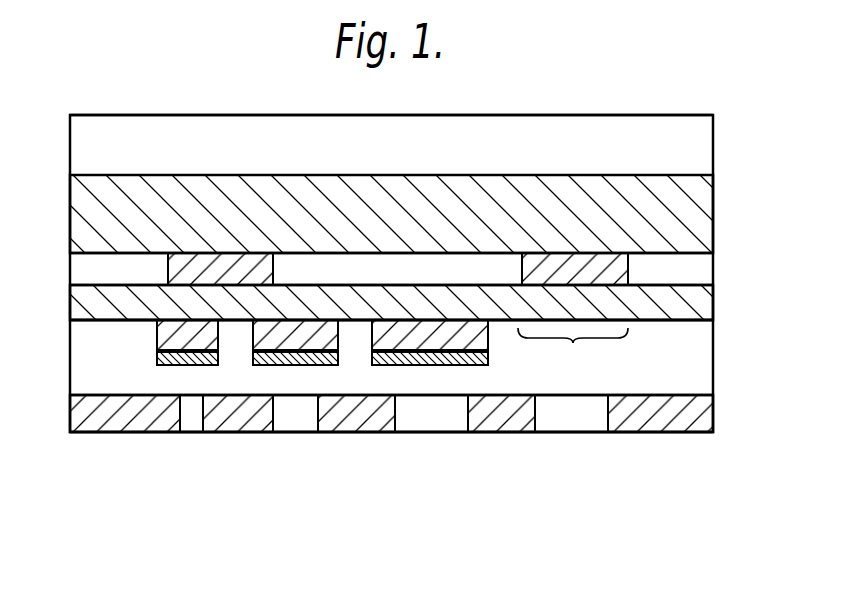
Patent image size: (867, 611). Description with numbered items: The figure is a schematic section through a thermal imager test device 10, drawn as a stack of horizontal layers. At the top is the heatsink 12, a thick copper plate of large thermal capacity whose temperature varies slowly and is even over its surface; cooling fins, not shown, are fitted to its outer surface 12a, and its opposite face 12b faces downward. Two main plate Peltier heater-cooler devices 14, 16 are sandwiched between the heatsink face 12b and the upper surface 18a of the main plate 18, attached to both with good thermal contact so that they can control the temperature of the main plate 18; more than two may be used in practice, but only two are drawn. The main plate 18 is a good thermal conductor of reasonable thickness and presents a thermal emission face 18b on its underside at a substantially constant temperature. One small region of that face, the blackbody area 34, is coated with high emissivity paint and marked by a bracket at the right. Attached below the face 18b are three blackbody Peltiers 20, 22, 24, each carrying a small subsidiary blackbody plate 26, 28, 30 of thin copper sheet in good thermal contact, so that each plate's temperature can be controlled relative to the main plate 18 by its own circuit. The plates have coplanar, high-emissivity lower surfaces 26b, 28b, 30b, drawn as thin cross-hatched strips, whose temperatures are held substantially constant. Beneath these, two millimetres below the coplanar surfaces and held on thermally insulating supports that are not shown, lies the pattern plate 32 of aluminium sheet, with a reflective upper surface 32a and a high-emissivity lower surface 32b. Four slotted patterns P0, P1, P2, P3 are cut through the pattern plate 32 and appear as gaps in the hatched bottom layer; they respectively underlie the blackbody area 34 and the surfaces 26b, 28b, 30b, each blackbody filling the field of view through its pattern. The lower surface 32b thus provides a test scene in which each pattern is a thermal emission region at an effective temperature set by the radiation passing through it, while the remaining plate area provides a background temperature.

The thermal imager test device 10 is at (80, 102).
The heatsink 12 is at (685, 223).
The heatsink surface 12a is at (685, 175).
The heatsink face 12b is at (688, 257).
The main plate Peltier heater-cooler device 14 is at (170, 263).
The main plate Peltier heater-cooler device 16 is at (522, 268).
The main plate 18 is at (695, 305).
The main plate surface 18a is at (688, 282).
The thermal emission face 18b is at (693, 323).
The blackbody Peltier 20 is at (460, 333).
The blackbody Peltier 22 is at (300, 338).
The blackbody Peltier 24 is at (208, 337).
The subsidiary blackbody plate 26 is at (460, 360).
The lower surface of blackbody plate 26b is at (412, 368).
The subsidiary blackbody plate 28 is at (338, 360).
The lower surface of blackbody plate 28b is at (298, 363).
The subsidiary blackbody plate 30 is at (183, 355).
The lower surface of blackbody plate 30b is at (160, 360).
The pattern plate 32 is at (700, 412).
The upper surface of pattern plate 32a is at (647, 395).
The lower surface of pattern plate 32b is at (653, 432).
The blackbody area 34 is at (573, 350).
The slotted pattern P0 is at (570, 413).
The slotted pattern P1 is at (430, 413).
The slotted pattern P2 is at (295, 412).
The slotted pattern P3 is at (192, 415).